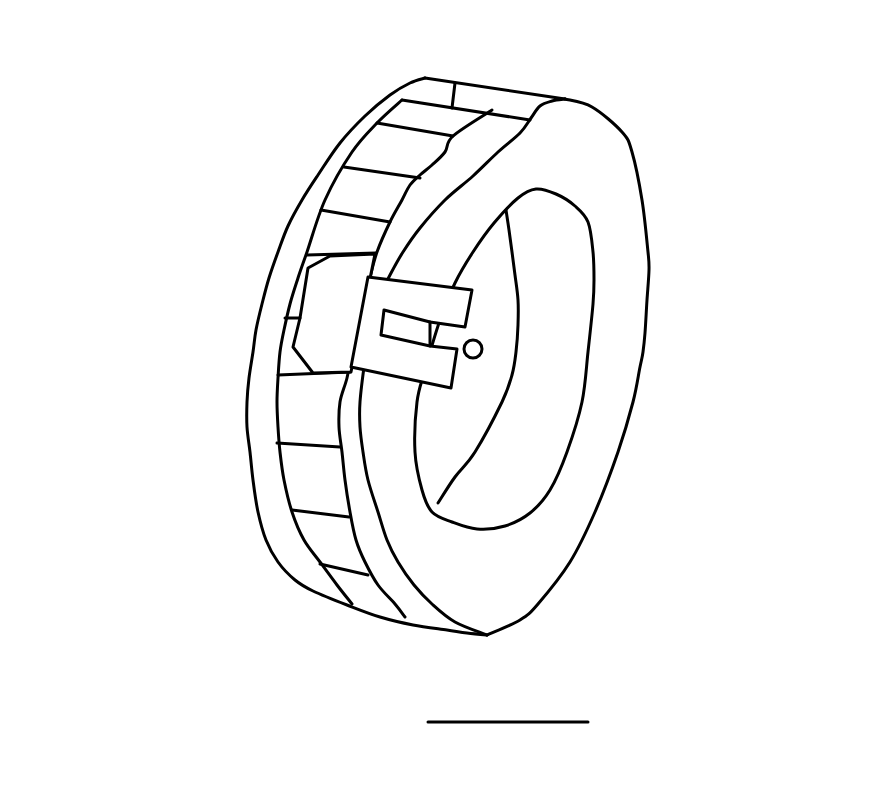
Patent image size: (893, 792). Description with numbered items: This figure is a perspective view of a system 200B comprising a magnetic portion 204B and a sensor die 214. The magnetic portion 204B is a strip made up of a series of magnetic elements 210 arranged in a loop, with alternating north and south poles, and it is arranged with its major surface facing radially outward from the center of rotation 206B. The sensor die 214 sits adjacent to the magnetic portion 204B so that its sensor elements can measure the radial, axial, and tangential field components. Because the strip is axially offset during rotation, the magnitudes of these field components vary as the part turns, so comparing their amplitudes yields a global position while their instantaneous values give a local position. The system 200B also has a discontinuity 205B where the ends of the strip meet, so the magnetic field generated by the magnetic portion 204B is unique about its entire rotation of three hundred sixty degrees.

The system 200B is at (143, 95).
The magnetic portion 204B is at (313, 528).
The discontinuity 205B is at (445, 101).
The center of rotation 206B is at (482, 348).
The magnetic elements 210 is at (295, 473).
The sensor die 214 is at (330, 277).